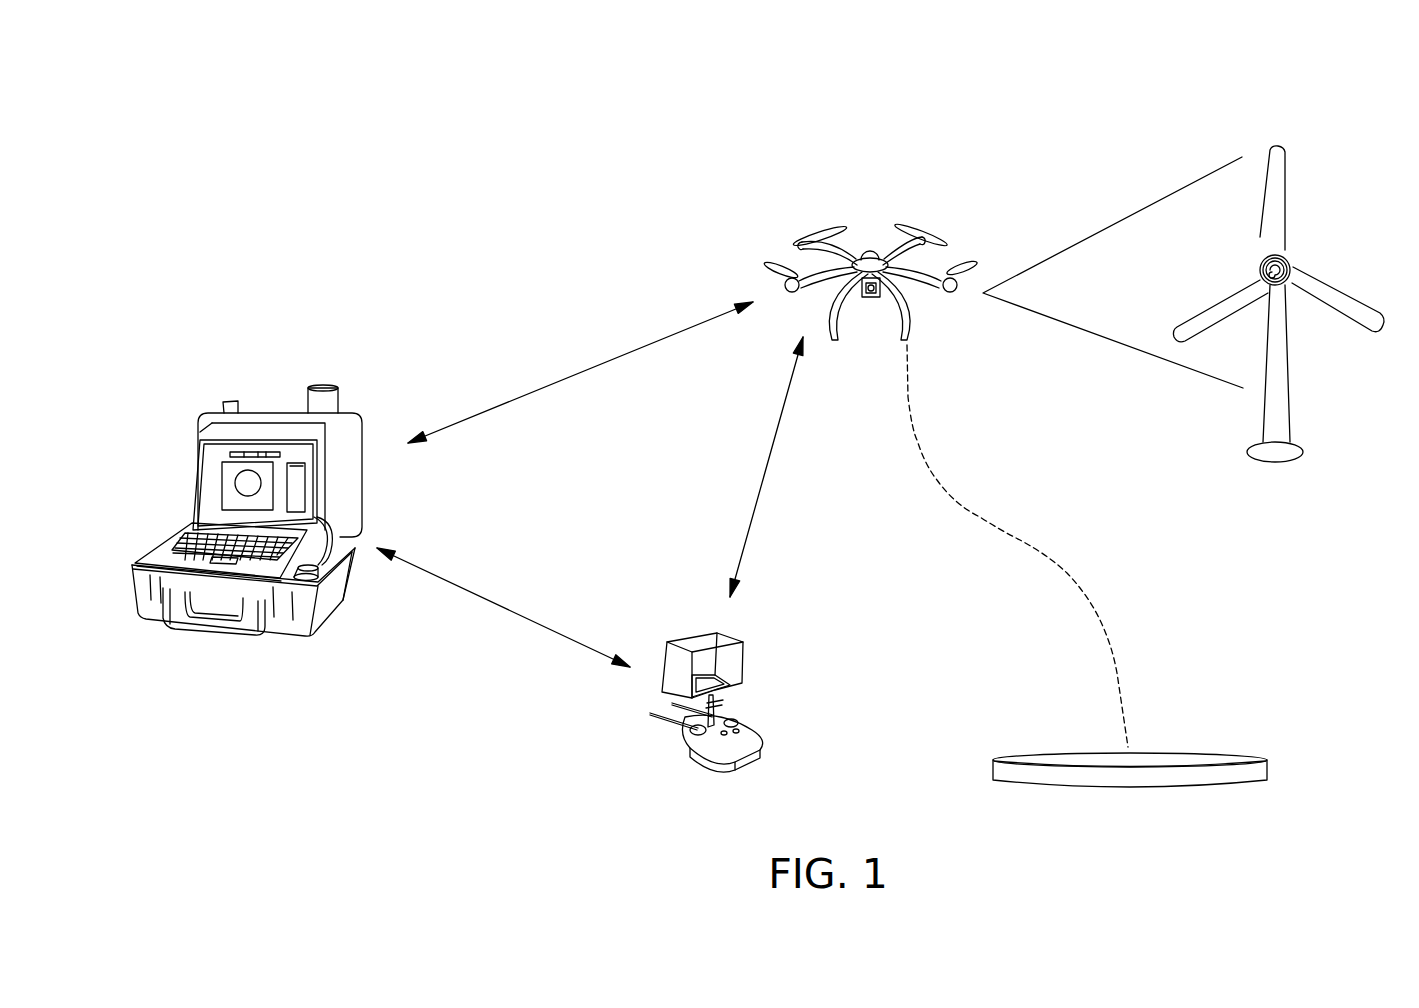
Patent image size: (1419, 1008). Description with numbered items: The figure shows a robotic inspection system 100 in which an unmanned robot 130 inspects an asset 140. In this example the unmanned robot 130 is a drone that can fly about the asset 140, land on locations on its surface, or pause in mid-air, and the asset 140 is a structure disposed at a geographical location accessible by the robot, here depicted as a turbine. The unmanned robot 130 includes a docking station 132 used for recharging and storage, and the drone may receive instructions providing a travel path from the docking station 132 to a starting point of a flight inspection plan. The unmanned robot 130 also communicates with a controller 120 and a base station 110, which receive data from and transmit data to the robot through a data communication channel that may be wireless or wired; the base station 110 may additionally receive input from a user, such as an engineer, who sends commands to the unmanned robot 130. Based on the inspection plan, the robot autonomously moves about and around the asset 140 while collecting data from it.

The robotic inspection system 100 is at (1198, 90).
The base station 110 is at (267, 412).
The controller 120 is at (680, 635).
The unmanned robot 130 is at (868, 250).
The docking station 132 is at (1210, 752).
The asset 140 is at (1288, 363).